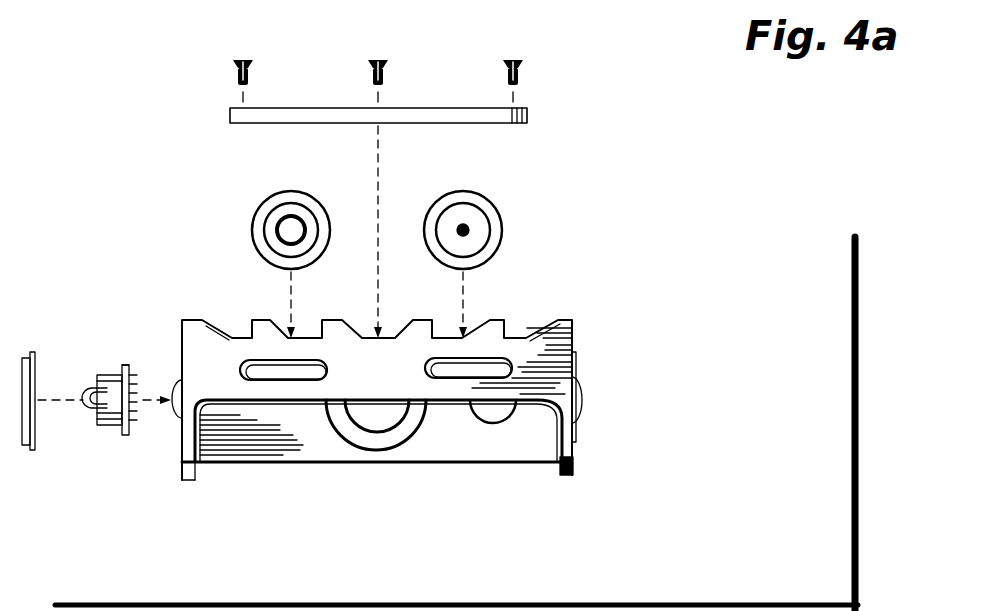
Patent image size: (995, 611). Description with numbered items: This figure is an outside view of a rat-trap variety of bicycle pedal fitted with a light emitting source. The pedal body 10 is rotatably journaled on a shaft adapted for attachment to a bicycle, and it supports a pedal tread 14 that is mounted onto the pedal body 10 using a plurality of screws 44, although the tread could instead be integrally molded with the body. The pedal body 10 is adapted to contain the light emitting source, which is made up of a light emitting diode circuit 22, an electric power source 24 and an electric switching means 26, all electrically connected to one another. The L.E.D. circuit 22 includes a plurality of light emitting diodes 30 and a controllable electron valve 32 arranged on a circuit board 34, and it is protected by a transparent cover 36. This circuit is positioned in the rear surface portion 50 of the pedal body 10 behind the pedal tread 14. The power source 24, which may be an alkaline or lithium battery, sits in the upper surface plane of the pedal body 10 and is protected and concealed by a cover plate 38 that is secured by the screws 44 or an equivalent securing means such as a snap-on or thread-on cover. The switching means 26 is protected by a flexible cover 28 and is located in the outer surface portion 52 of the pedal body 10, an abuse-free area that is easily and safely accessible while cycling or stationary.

The pedal body 10 is at (302, 422).
The pedal tread 14 is at (215, 362).
The light emitting diode circuit 22 is at (137, 364).
The electric power source 24 is at (497, 256).
The electric switching means 26 is at (619, 477).
The flexible cover 28 is at (570, 470).
The light emitting diodes 30 is at (90, 408).
The controllable electron valve 32 is at (100, 423).
The circuit board 34 is at (122, 365).
The transparent cover 36 is at (37, 360).
The cover plate 38 is at (505, 124).
The screws 44 is at (513, 55).
The rear surface portion 50 is at (183, 428).
The outer surface portion 52 is at (455, 432).